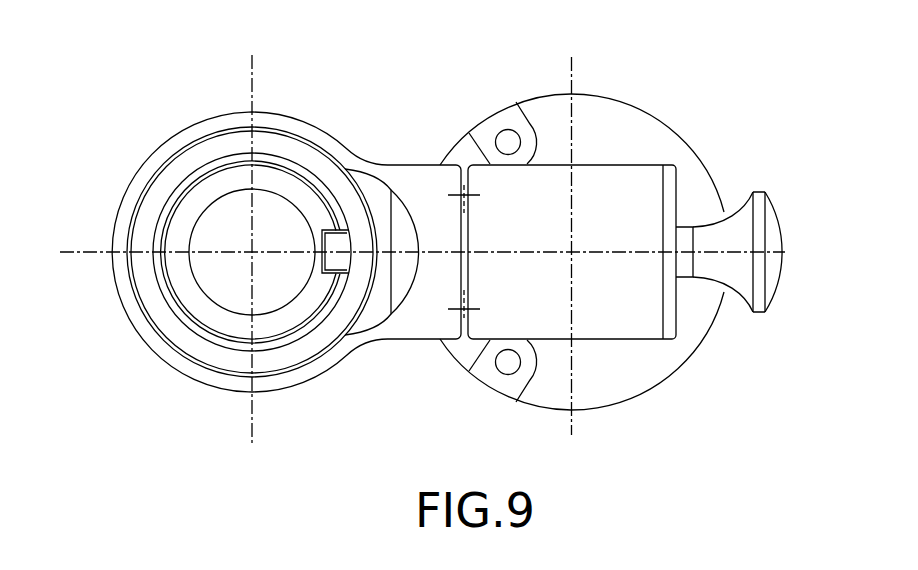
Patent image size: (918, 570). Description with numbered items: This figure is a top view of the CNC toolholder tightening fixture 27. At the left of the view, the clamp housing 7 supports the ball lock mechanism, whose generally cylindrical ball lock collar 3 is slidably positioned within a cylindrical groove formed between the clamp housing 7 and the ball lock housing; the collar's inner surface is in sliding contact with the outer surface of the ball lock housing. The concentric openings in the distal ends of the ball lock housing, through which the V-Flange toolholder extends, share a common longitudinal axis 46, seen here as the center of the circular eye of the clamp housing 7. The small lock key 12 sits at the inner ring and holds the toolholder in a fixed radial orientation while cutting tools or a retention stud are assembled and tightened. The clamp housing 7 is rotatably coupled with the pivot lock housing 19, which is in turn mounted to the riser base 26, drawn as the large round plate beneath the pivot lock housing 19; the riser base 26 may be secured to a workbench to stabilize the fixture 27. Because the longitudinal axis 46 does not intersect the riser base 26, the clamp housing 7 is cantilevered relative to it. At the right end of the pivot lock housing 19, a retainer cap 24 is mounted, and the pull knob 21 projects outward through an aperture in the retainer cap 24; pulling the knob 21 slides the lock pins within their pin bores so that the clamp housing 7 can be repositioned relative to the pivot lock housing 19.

The toolholder tightening fixture 27 is at (92, 103).
The clamp housing 7 is at (402, 178).
The ball lock collar 3 is at (267, 142).
The lock key 12 is at (342, 243).
The common longitudinal axis 46 is at (252, 252).
The riser base 26 is at (553, 108).
The pivot lock housing 19 is at (593, 182).
The retainer cap 24 is at (669, 175).
The pull knob 21 is at (758, 193).